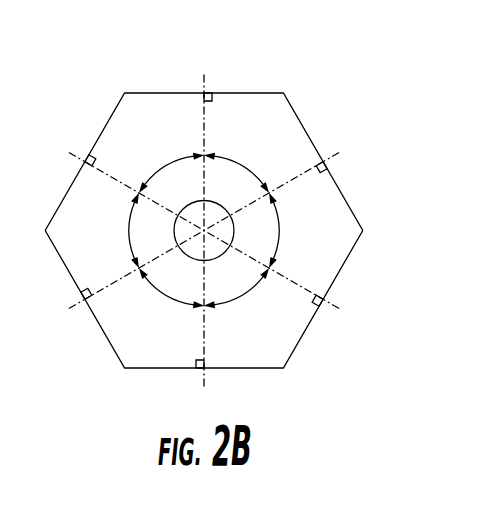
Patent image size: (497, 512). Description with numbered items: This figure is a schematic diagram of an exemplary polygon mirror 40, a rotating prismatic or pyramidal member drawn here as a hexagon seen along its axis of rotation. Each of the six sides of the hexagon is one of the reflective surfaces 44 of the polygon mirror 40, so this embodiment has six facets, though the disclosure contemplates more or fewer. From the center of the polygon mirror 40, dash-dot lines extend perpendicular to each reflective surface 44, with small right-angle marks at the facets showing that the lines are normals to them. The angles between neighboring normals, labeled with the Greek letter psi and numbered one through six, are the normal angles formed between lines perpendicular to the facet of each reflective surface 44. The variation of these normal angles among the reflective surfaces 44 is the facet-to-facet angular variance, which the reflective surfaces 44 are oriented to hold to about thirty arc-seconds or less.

The polygon mirror 40 is at (204, 207).
The reflective surfaces 44 is at (106, 128).